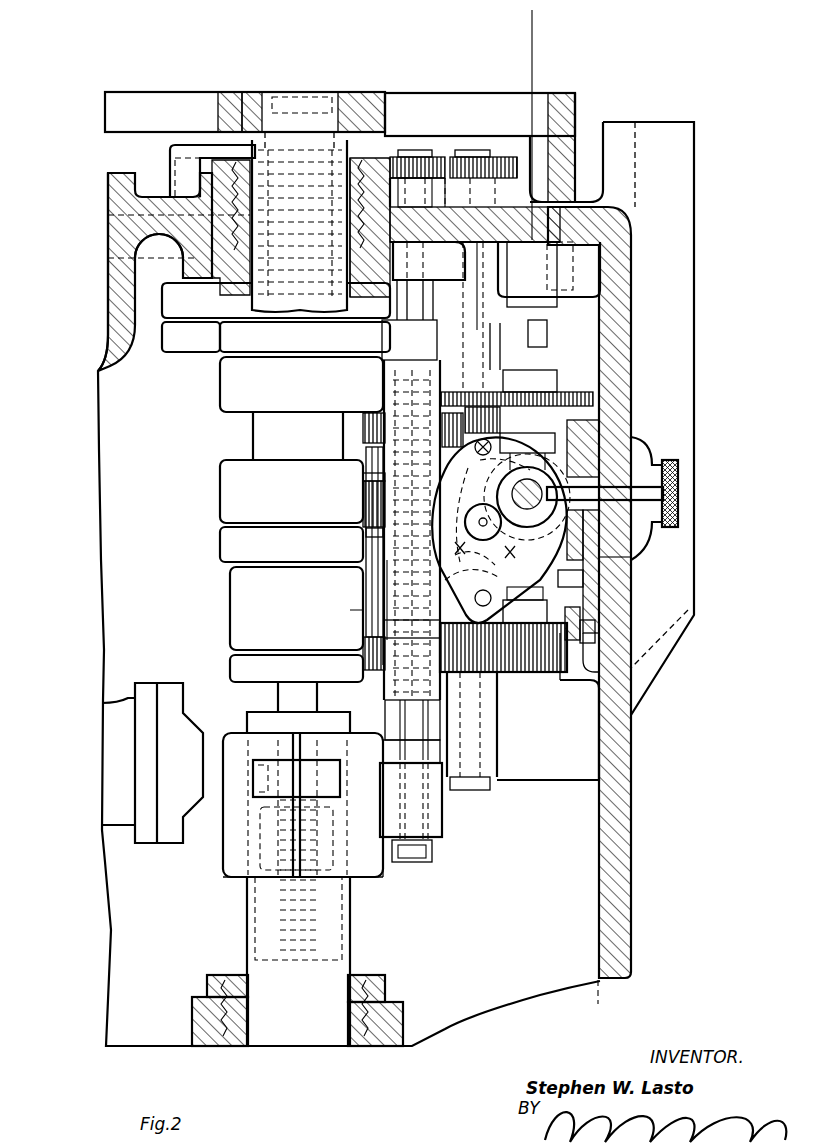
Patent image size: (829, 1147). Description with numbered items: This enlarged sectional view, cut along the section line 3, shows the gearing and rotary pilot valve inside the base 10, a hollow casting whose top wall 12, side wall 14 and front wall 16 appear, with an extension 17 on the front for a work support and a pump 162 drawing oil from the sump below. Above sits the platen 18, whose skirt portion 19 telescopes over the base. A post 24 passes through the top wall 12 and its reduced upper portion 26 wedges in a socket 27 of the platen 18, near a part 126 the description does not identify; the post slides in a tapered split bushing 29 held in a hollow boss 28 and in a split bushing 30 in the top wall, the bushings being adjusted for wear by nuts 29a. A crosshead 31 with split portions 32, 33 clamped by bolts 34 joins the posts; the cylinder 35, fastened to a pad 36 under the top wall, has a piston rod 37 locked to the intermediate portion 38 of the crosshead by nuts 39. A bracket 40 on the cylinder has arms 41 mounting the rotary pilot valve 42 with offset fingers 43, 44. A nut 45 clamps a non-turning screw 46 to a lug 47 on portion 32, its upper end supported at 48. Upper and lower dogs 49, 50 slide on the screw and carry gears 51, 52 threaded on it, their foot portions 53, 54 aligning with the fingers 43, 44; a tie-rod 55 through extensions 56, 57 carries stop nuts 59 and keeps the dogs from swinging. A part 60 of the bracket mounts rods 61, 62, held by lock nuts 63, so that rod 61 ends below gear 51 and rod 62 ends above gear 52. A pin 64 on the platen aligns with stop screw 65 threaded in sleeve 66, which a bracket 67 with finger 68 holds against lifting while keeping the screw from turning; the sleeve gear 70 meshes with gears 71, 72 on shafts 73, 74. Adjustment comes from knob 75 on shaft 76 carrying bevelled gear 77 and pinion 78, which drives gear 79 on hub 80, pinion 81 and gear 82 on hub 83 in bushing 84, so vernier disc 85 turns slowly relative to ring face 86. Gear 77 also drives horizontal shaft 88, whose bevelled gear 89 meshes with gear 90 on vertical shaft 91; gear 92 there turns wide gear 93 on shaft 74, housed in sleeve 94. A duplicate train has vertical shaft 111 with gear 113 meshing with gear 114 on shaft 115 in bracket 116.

The section line 3- 3 is at (541, 26).
The base 10 is at (646, 900).
The top wall 12 is at (497, 215).
The side wall 14 is at (344, 564).
The front wall 16 is at (630, 918).
The extension 17 is at (670, 694).
The platen 18 is at (600, 112).
The skirt portion 19 is at (578, 132).
The post 24 is at (257, 303).
The reduced diameter upper portion 26 is at (299, 226).
The socket 27 is at (340, 110).
The hollow boss 28 is at (397, 1020).
The tapered split bushing 29 is at (358, 1048).
The nuts 29a is at (397, 988).
The split tapered bushing 30 is at (165, 290).
The crosshead 31 is at (216, 889).
The split portion 32 is at (360, 875).
The split portion 33 is at (232, 866).
The bolts 34 is at (255, 782).
The cylinder 35 is at (210, 500).
The pad 36 is at (145, 262).
The piston rod 37 is at (283, 698).
The intermediate portion 38 is at (257, 907).
The nuts 39 is at (262, 829).
The bracket 40 is at (395, 505).
The arms 41 is at (498, 568).
The rotary pilot valve 42 is at (512, 556).
The finger 43 is at (488, 510).
The finger 44 is at (476, 548).
The nut 45 is at (432, 858).
The screw 46 is at (383, 752).
The lug 47 is at (445, 814).
The support 48 is at (449, 192).
The upper dog 49 is at (390, 400).
The lower dog 50 is at (385, 628).
The gear 51 is at (363, 428).
The gear 52 is at (370, 672).
The foot portion 53 is at (470, 560).
The foot portion 54 is at (455, 570).
The tie-rod 55 is at (393, 572).
The extension portion 56 is at (385, 405).
The extension portion 57 is at (368, 630).
The nuts 59 is at (383, 726).
The part of bracket 60 is at (365, 496).
The rod 61 is at (365, 472).
The rod 62 is at (368, 583).
The lock nuts 63 is at (365, 481).
The pin 64 is at (311, 92).
The stop screw 65 is at (370, 100).
The sleeve 66 is at (215, 197).
The bracket 67 is at (206, 145).
The finger 68 is at (240, 148).
The gear 70 is at (235, 160).
The gear 71 is at (405, 158).
The gear 72 is at (505, 155).
The shaft 73 is at (415, 155).
The shaft 74 is at (478, 152).
The knob 75 is at (680, 470).
The shaft 76 is at (665, 494).
The bevelled gear 77 is at (572, 430).
The small pinion gear 78 is at (618, 433).
The large diameter gear 79 is at (575, 650).
The hub 80 is at (568, 645).
The small pinion gear 81 is at (603, 612).
The large diameter gear 82 is at (640, 558).
The hub 83 is at (655, 512).
The bushing 84 is at (660, 535).
The disc 85 is at (655, 545).
The ring-like face 86 is at (650, 553).
The horizontal shaft 88 is at (530, 508).
The bevelled gear 89 is at (493, 510).
The bevelled gear 90 is at (548, 452).
The vertical shaft 91 is at (540, 328).
The gear 92 is at (597, 400).
The gear 93 is at (500, 418).
The sleeve 94 is at (490, 320).
The vertical shaft 111 is at (529, 592).
The gear 113 is at (503, 636).
The gear 114 is at (543, 675).
The shaft 115 is at (490, 790).
The bracket 116 is at (582, 778).
The screw 126 is at (312, 97).
The pump 162 is at (115, 703).